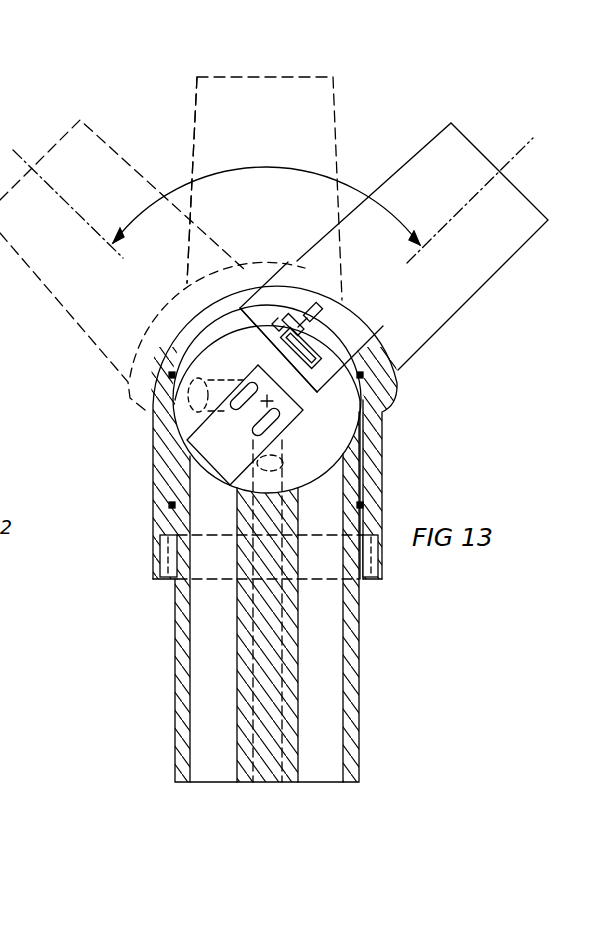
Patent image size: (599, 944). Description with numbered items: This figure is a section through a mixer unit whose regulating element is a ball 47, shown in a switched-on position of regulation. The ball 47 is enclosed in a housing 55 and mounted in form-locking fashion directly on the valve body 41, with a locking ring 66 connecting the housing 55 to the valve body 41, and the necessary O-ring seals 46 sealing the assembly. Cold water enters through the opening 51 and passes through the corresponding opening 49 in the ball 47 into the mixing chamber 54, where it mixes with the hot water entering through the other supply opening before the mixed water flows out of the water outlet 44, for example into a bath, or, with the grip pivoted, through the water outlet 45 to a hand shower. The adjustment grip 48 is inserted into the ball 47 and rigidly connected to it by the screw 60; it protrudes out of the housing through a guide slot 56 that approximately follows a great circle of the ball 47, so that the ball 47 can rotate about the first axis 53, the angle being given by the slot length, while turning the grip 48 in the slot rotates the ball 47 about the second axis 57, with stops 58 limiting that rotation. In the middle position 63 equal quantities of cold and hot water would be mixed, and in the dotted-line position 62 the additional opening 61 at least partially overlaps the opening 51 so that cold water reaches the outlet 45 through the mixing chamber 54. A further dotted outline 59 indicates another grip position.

The valve body 41 is at (349, 721).
The water outlet 44 is at (207, 665).
The water outlet 45 is at (333, 665).
The O-ring seals 46 is at (166, 358).
The ball 47 is at (345, 397).
The adjustment grip 48 is at (503, 252).
The opening 49 is at (300, 442).
The opening 51 is at (284, 463).
The first axis 53 is at (400, 372).
The mixing chamber 54 is at (233, 455).
The housing 55 is at (372, 484).
The guide slot 56 is at (233, 300).
The second axis 57 is at (520, 150).
The stops 58 is at (325, 316).
The arm position 59 is at (262, 167).
The screw 60 is at (318, 340).
The additional opening 61 is at (187, 397).
The position 62 is at (52, 318).
The middle position 63 is at (193, 131).
The locking ring 66 is at (375, 580).